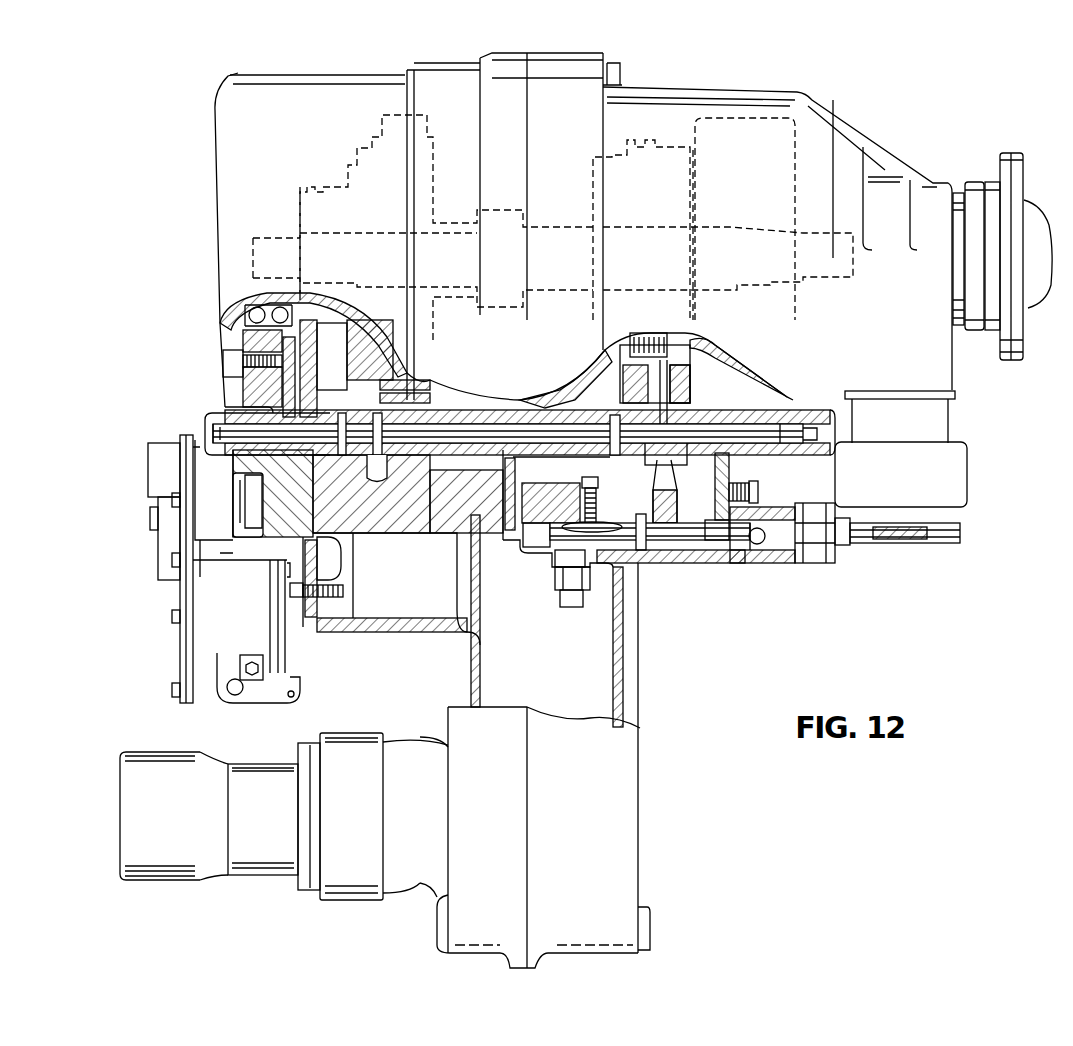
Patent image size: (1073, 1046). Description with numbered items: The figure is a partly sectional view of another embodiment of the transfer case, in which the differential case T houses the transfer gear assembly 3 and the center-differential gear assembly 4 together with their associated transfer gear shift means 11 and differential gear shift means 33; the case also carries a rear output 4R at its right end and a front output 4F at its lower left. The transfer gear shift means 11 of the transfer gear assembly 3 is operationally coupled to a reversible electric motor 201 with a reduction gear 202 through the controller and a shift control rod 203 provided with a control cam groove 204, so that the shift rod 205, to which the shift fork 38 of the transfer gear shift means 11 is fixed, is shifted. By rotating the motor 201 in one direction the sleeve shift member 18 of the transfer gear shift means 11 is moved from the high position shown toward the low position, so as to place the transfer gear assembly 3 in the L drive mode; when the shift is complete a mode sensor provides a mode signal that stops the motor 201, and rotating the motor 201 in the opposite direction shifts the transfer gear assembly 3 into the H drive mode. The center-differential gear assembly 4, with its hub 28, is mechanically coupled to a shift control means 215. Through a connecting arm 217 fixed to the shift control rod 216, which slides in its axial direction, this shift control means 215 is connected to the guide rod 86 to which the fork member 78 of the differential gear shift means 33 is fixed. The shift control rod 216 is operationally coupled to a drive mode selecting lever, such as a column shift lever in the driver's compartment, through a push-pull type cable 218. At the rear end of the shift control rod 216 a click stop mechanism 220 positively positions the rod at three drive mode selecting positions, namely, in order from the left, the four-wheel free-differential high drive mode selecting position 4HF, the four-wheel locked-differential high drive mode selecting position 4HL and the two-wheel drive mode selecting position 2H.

The differential case T is at (603, 44).
The transfer gear assembly 3 is at (395, 123).
The transfer gear shift means 11 is at (310, 213).
The differential gear shift means 33 is at (655, 137).
The center-differential gear assembly 4 is at (776, 122).
The rear output shaft 4R is at (1030, 310).
The shift rod 205 is at (222, 426).
The sleeve shift member 18 is at (323, 333).
The shift fork 38 is at (320, 396).
The fork member 78 is at (610, 403).
The guide rod 86 is at (580, 436).
The hub 28 is at (672, 372).
The click stop mechanism 220 is at (607, 512).
The connecting arm 217 is at (668, 479).
The reduction gear 202 is at (155, 541).
The shift control rod 203 is at (270, 512).
The reversible electric motor 201 is at (195, 638).
The control cam groove 204 is at (424, 545).
The H drive mode H is at (368, 545).
The L drive mode L is at (414, 545).
The 4W-DF-H drive mode selecting position 4HF is at (558, 617).
The 4W-DL-H drive mode selecting position 4HL is at (587, 617).
The 2W drive mode selecting position 2H is at (610, 615).
The shift control rod 216 is at (713, 556).
The shift control means 215 is at (777, 563).
The push-pull type cable 218 is at (937, 543).
The front output shaft 4F is at (165, 848).